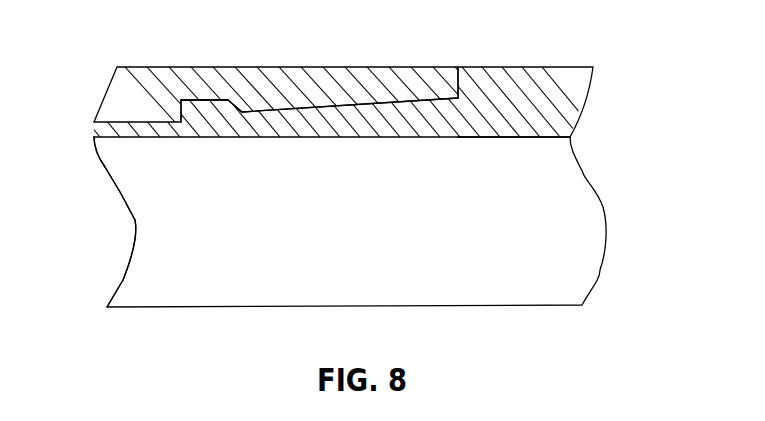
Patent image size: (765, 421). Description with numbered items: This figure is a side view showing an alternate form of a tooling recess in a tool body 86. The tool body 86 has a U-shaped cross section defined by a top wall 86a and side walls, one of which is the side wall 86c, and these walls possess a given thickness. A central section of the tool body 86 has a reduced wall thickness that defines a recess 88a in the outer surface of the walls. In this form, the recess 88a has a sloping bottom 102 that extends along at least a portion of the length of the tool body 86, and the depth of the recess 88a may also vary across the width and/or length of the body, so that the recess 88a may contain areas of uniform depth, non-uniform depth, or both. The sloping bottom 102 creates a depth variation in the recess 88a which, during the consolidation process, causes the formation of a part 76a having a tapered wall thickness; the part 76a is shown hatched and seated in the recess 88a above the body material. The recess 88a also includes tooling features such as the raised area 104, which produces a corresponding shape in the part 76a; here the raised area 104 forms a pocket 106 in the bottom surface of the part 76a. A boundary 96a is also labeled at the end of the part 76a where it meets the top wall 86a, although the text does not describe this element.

The part 76a is at (308, 93).
The tool body 86 is at (550, 203).
The top wall 86a is at (503, 107).
The side wall 86c is at (155, 226).
The recess 88a is at (130, 134).
The boundary wall 96a is at (452, 82).
The sloping bottom 102 is at (371, 96).
The raised area 104 is at (192, 95).
The pocket 106 is at (209, 108).